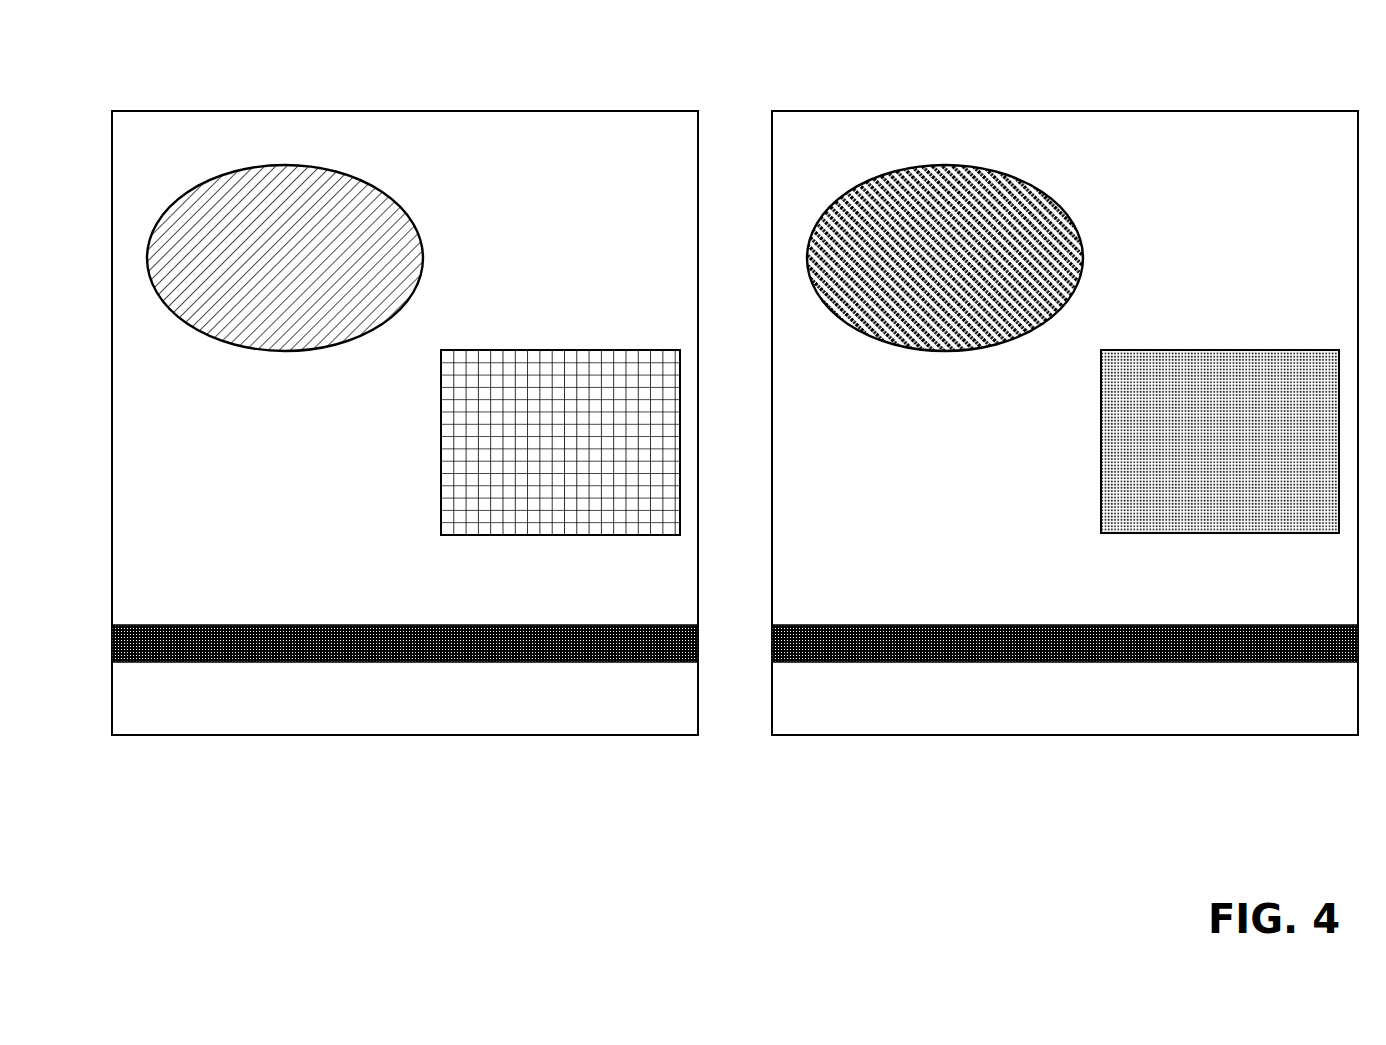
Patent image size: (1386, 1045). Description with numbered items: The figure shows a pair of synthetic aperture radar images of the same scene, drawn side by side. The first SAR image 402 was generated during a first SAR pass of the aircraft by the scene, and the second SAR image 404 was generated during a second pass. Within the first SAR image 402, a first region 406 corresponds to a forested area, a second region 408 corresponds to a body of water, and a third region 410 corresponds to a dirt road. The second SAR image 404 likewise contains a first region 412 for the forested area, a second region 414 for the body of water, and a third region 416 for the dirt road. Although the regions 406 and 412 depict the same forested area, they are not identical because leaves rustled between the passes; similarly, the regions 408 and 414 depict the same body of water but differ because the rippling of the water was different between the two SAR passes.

The first SAR image 402 is at (490, 81).
The second SAR image 404 is at (1132, 63).
The first region 406 is at (422, 249).
The second region 408 is at (633, 350).
The third region 410 is at (362, 625).
The first region 412 is at (1075, 226).
The second region 414 is at (1256, 352).
The third region 416 is at (935, 625).